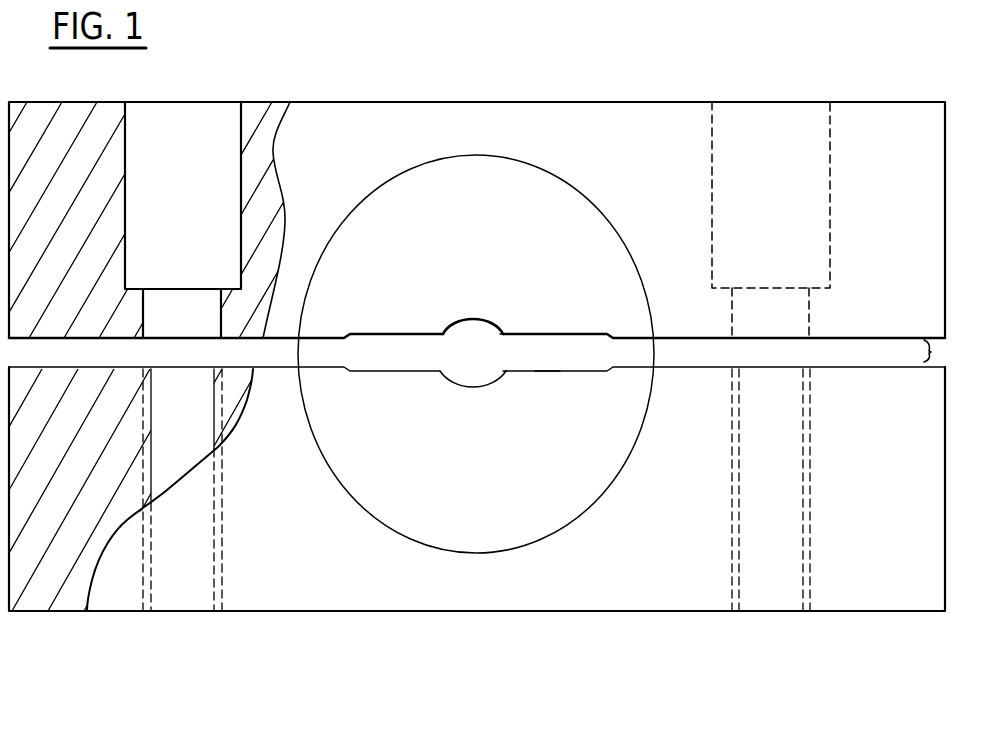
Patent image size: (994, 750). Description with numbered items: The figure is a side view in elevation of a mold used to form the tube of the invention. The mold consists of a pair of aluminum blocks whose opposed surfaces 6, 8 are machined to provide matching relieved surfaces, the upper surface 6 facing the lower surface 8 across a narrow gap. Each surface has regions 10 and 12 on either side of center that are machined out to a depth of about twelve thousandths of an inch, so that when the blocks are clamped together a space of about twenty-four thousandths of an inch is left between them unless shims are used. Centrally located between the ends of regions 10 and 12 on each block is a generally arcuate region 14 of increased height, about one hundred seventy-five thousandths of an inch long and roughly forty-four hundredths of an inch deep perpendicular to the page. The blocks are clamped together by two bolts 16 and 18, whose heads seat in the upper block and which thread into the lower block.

The opposed surface 6 is at (679, 316).
The opposed surface 8 is at (700, 363).
The region 10 is at (437, 303).
The region 12 is at (538, 336).
The arcuate region 14 is at (501, 330).
The bolt 16 is at (200, 116).
The bolt 18 is at (724, 118).